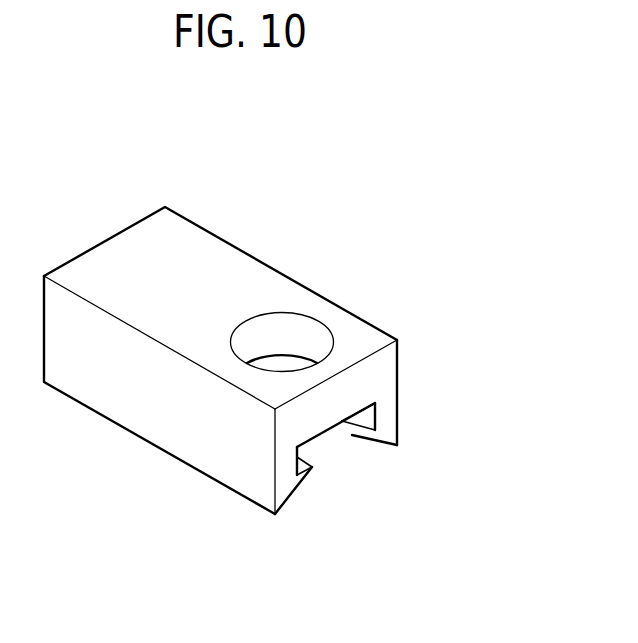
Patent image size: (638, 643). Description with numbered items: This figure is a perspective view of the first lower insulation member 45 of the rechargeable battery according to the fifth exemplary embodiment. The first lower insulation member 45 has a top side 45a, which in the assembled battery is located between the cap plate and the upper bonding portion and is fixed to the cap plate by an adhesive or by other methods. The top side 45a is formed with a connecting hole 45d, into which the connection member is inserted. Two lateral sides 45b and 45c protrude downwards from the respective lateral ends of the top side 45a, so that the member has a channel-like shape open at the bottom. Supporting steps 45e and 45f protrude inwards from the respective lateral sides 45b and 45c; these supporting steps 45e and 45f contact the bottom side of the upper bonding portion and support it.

The first lower insulation member 45 is at (255, 222).
The top side 45a is at (130, 253).
The lateral side 45b is at (387, 415).
The lateral side 45c is at (290, 472).
The connecting hole 45d is at (303, 337).
The supporting step 45e is at (357, 431).
The supporting step 45f is at (307, 456).